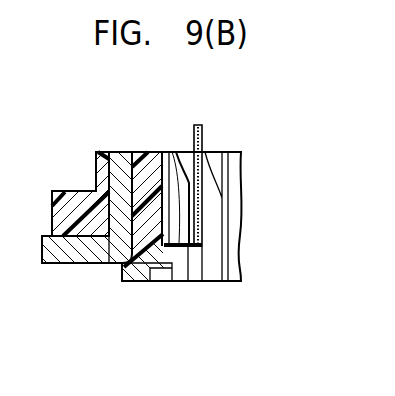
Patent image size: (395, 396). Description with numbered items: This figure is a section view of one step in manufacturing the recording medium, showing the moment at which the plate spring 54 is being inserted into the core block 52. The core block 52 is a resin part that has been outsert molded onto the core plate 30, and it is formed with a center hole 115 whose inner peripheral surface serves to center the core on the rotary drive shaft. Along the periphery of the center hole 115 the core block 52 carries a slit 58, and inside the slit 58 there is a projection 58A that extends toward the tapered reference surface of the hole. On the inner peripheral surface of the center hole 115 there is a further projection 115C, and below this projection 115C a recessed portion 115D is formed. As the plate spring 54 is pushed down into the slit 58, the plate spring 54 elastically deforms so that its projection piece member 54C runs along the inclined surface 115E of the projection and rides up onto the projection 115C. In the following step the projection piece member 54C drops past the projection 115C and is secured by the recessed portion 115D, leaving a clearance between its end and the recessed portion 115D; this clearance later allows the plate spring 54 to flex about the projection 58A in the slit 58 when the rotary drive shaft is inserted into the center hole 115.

The core plate 30 is at (63, 250).
The core block 52 is at (74, 200).
The plate spring 54 is at (204, 128).
The projection piece member 54C is at (183, 279).
The slit 58 is at (188, 152).
The projection 58A is at (170, 152).
The center hole 115 is at (229, 152).
The projection 115C is at (126, 257).
The recessed portion 115D is at (160, 282).
The inclined surface 115E is at (142, 152).